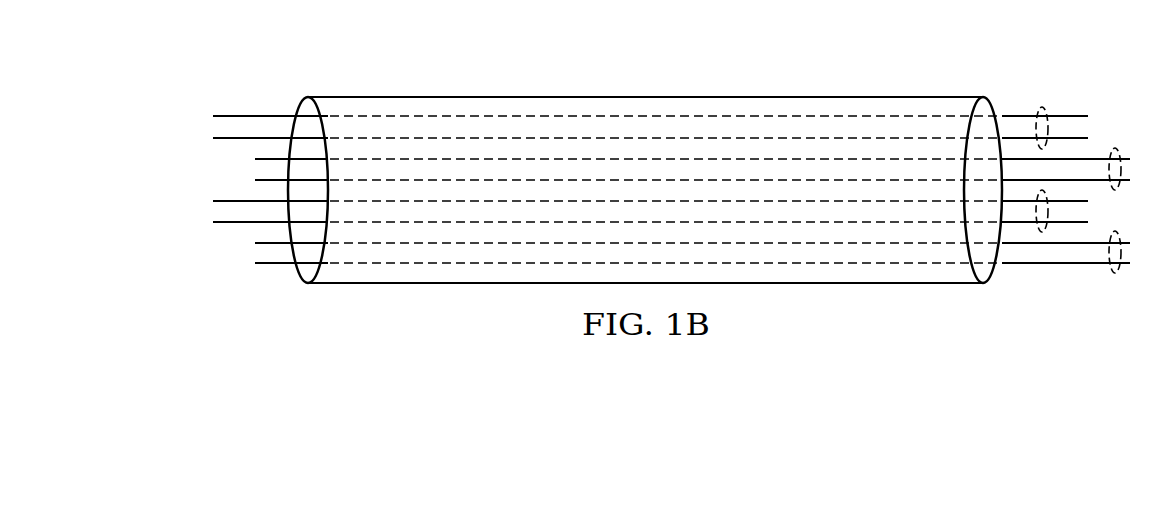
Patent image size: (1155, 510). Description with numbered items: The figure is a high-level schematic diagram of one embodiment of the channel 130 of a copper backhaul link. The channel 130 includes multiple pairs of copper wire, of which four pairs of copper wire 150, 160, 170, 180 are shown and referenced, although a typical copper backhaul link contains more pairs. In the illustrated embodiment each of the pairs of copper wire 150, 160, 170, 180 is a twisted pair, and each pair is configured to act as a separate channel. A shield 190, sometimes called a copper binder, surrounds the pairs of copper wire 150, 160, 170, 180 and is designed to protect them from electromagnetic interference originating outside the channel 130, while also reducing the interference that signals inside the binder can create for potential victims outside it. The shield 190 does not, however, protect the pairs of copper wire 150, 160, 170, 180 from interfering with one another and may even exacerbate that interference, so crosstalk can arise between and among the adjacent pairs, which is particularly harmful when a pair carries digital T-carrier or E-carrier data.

The channel 130 is at (384, 48).
The shield 190 is at (645, 96).
The pair of copper wire 150 is at (1043, 107).
The pair of copper wire 160 is at (1115, 148).
The pair of copper wire 170 is at (1043, 232).
The pair of copper wire 180 is at (1115, 273).